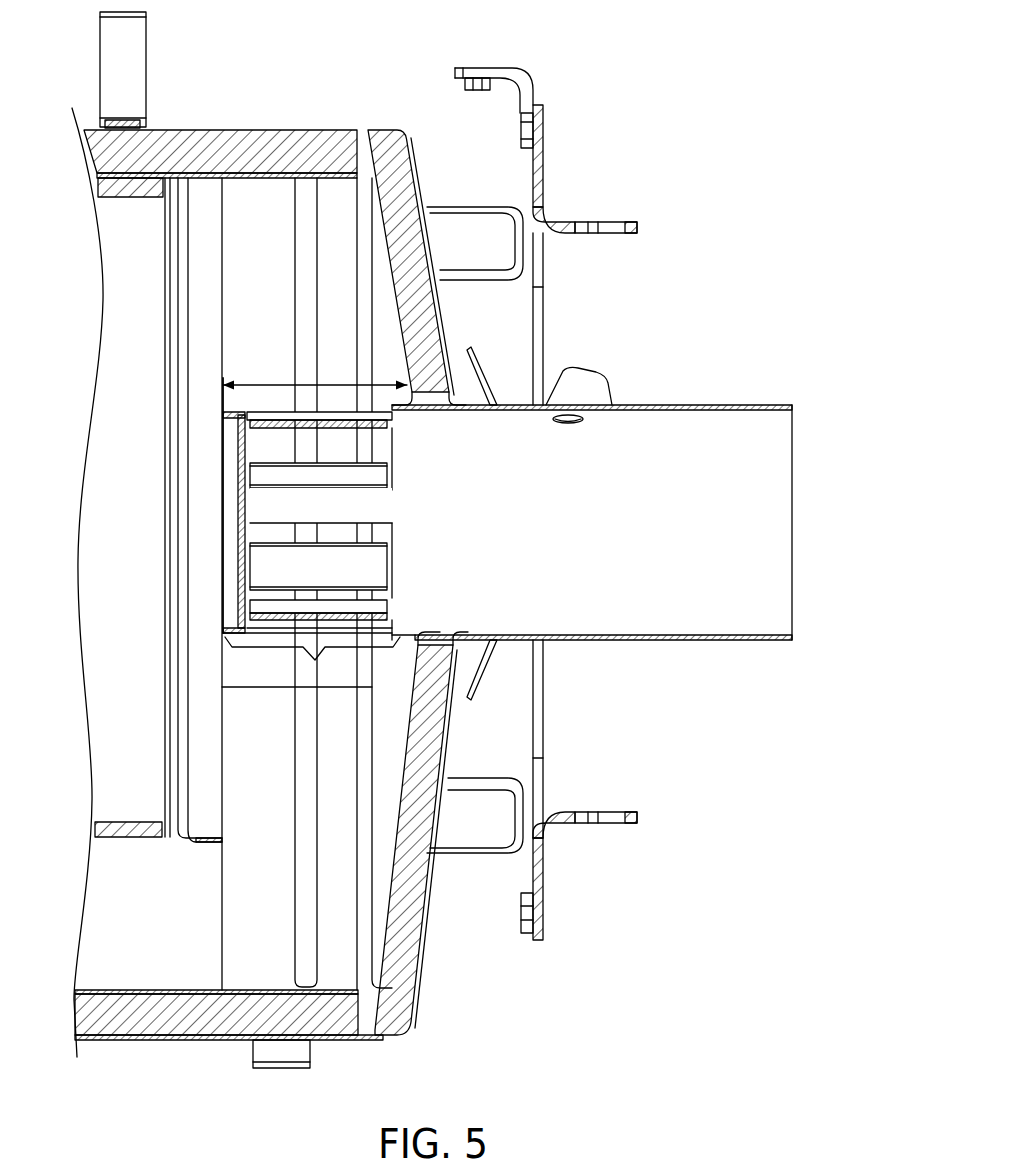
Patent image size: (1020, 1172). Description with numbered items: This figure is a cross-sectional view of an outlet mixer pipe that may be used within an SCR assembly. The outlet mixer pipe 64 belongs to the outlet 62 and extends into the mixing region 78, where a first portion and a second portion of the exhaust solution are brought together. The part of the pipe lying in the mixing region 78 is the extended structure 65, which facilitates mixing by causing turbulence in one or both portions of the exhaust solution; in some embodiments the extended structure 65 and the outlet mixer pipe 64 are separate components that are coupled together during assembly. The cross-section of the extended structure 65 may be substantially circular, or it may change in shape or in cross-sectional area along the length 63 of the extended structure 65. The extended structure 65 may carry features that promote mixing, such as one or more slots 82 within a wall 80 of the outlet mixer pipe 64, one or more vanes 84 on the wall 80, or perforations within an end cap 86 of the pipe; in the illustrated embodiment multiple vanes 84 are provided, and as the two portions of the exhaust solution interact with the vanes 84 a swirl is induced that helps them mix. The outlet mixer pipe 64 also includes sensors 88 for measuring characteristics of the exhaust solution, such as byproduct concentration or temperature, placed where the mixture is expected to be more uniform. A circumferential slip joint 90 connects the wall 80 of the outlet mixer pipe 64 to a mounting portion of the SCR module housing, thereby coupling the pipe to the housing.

The outlet 62 is at (760, 405).
The length 63 is at (335, 383).
The outlet mixer pipe 64 is at (621, 643).
The extended structure 65 is at (311, 665).
The mixing region 78 is at (252, 190).
The wall 80 is at (380, 503).
The slots 82 is at (386, 447).
The vanes 84 is at (378, 573).
The end cap 86 is at (232, 518).
The sensors 88 is at (614, 452).
The circumferential slip joint 90 is at (464, 384).